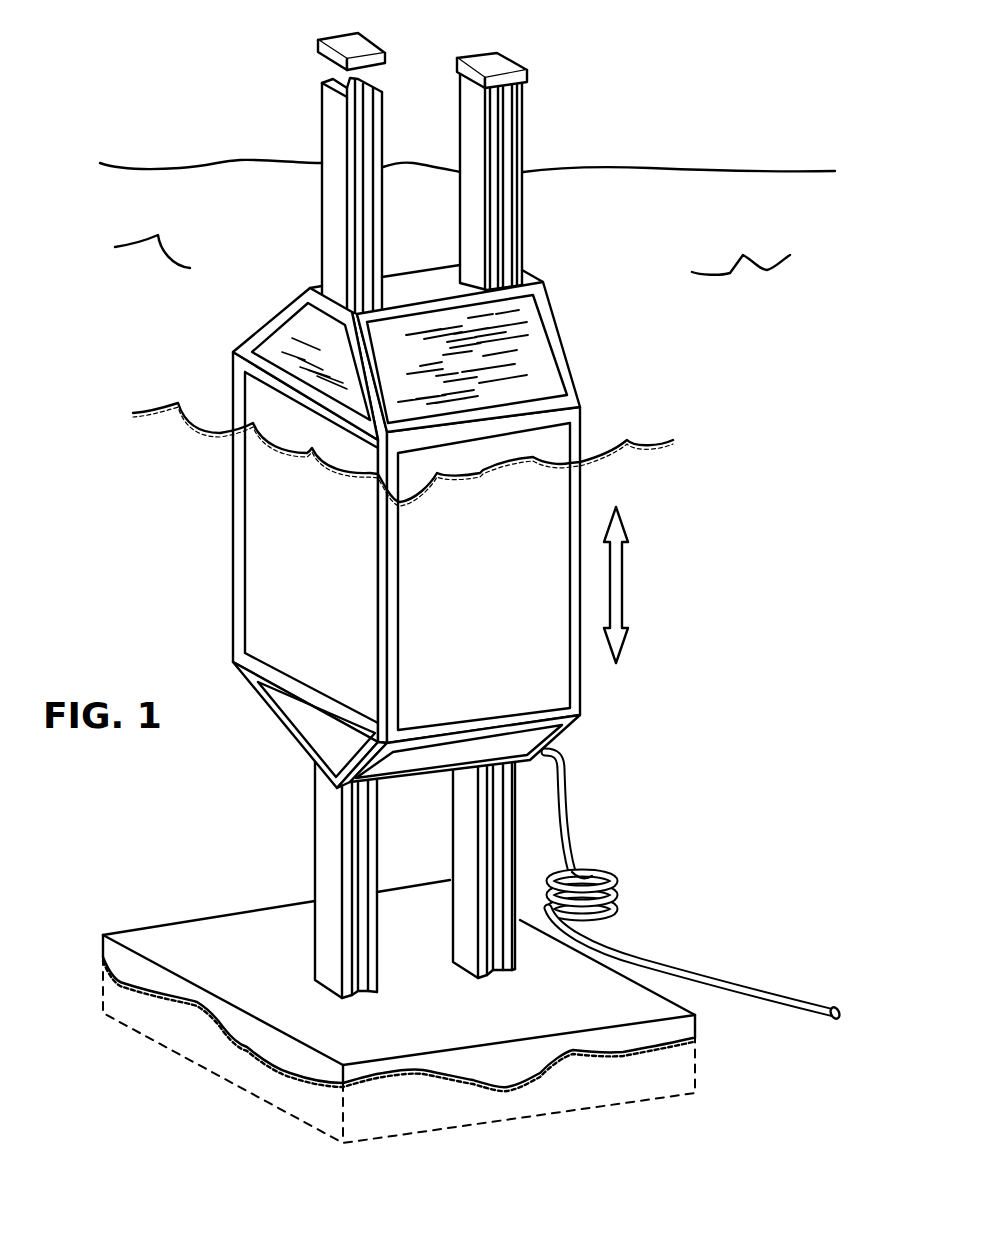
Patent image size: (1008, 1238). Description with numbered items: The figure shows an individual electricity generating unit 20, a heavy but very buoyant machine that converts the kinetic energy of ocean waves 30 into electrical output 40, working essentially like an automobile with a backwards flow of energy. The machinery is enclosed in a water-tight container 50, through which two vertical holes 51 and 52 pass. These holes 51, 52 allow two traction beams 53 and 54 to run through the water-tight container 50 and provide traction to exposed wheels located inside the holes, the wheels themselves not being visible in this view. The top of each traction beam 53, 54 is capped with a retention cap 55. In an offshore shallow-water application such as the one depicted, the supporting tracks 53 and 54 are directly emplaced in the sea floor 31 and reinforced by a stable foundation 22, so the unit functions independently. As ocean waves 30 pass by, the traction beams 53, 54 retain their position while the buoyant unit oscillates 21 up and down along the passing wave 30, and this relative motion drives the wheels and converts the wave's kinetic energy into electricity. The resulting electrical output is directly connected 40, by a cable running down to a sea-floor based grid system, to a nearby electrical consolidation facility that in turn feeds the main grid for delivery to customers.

The individual electricity generating unit 20 is at (376, 512).
The oscillation 21 is at (623, 578).
The stable foundation 22 is at (193, 920).
The ocean waves 30 is at (133, 243).
The sea floor 31 is at (122, 984).
The electrical output 40 is at (838, 1010).
The water-tight container 50 is at (233, 555).
The vertical hole 51 is at (522, 277).
The vertical hole 52 is at (322, 285).
The traction beam 53 is at (523, 140).
The traction beam 54 is at (318, 153).
The retention cap 55 is at (383, 45).